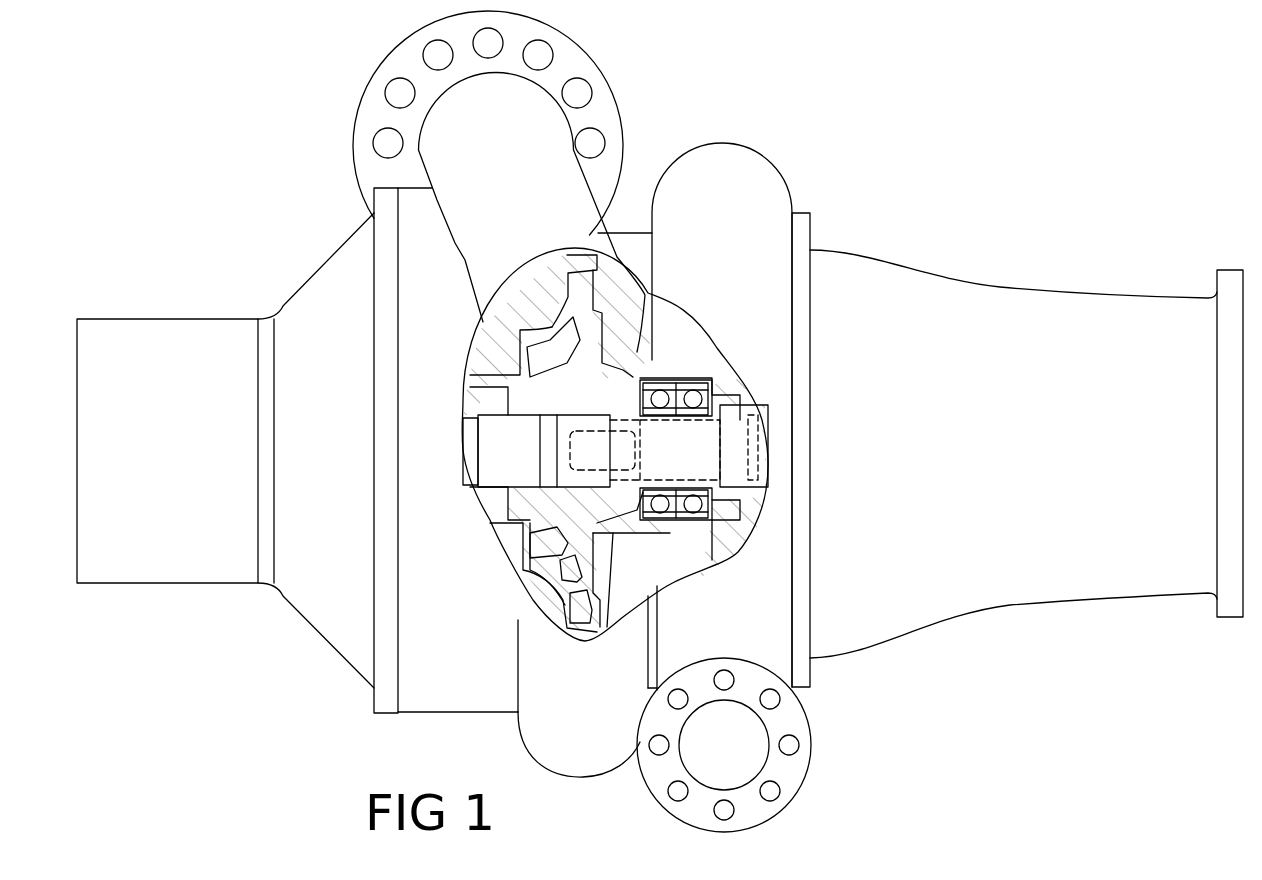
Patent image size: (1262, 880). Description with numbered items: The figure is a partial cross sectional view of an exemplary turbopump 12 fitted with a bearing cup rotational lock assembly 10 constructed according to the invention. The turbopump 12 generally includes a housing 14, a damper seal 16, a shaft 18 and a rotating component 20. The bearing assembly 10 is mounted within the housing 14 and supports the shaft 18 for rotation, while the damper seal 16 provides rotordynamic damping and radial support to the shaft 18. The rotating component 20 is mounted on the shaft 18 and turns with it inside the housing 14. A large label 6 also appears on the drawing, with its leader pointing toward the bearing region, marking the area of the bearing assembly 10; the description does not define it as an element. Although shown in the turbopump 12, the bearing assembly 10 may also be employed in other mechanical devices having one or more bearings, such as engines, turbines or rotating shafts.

The detail region shown in FIG. 6 is at (640, 372).
The bearing cup rotational lock assembly 10 is at (697, 376).
The turbopump 12 is at (868, 169).
The housing 14 is at (632, 375).
The damper seal 16 is at (728, 385).
The shaft 18 is at (753, 493).
The rotating component 20 is at (515, 507).